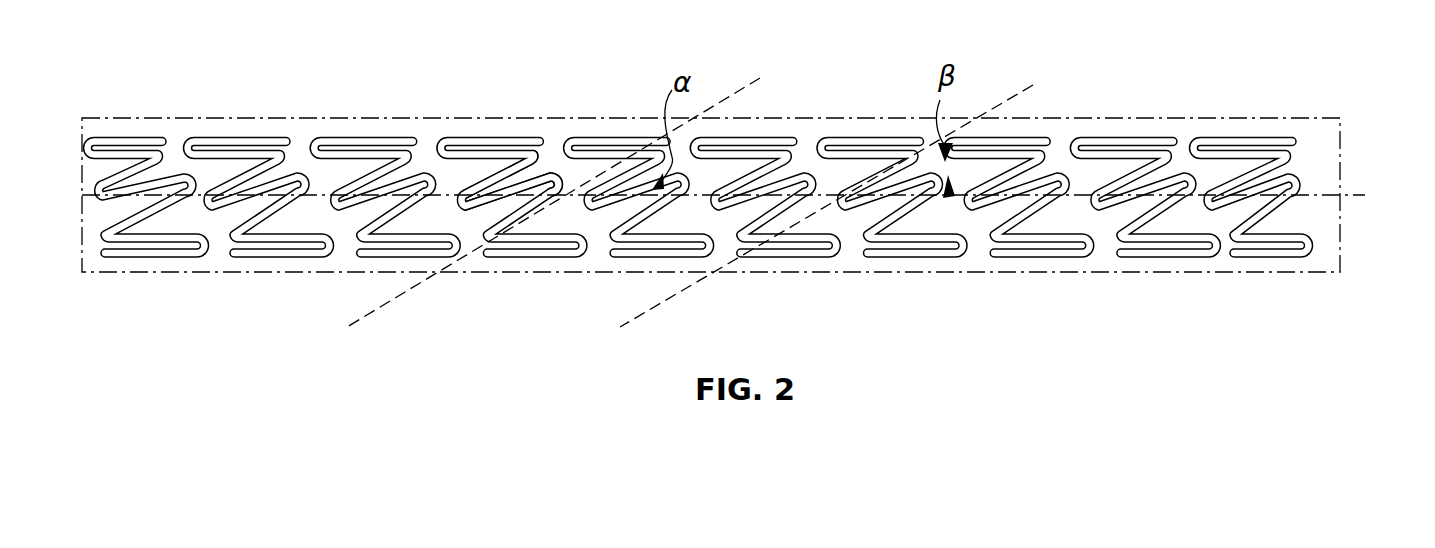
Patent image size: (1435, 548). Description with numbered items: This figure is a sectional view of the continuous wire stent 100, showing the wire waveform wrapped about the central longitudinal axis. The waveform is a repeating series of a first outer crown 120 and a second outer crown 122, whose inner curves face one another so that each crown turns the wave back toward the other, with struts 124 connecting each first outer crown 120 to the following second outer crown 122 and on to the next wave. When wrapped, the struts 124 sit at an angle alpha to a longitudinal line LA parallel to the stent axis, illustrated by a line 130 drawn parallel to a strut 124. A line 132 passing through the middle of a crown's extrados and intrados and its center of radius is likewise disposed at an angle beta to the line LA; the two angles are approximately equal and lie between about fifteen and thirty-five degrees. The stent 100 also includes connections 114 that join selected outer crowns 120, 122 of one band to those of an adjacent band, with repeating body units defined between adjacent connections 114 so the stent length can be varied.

The stent 100 is at (748, 139).
The connections 114 is at (1212, 152).
The first outer crown 120 is at (455, 186).
The second outer crown 122 is at (557, 177).
The struts 124 is at (500, 178).
The line 130 is at (582, 187).
The line 132 is at (850, 187).